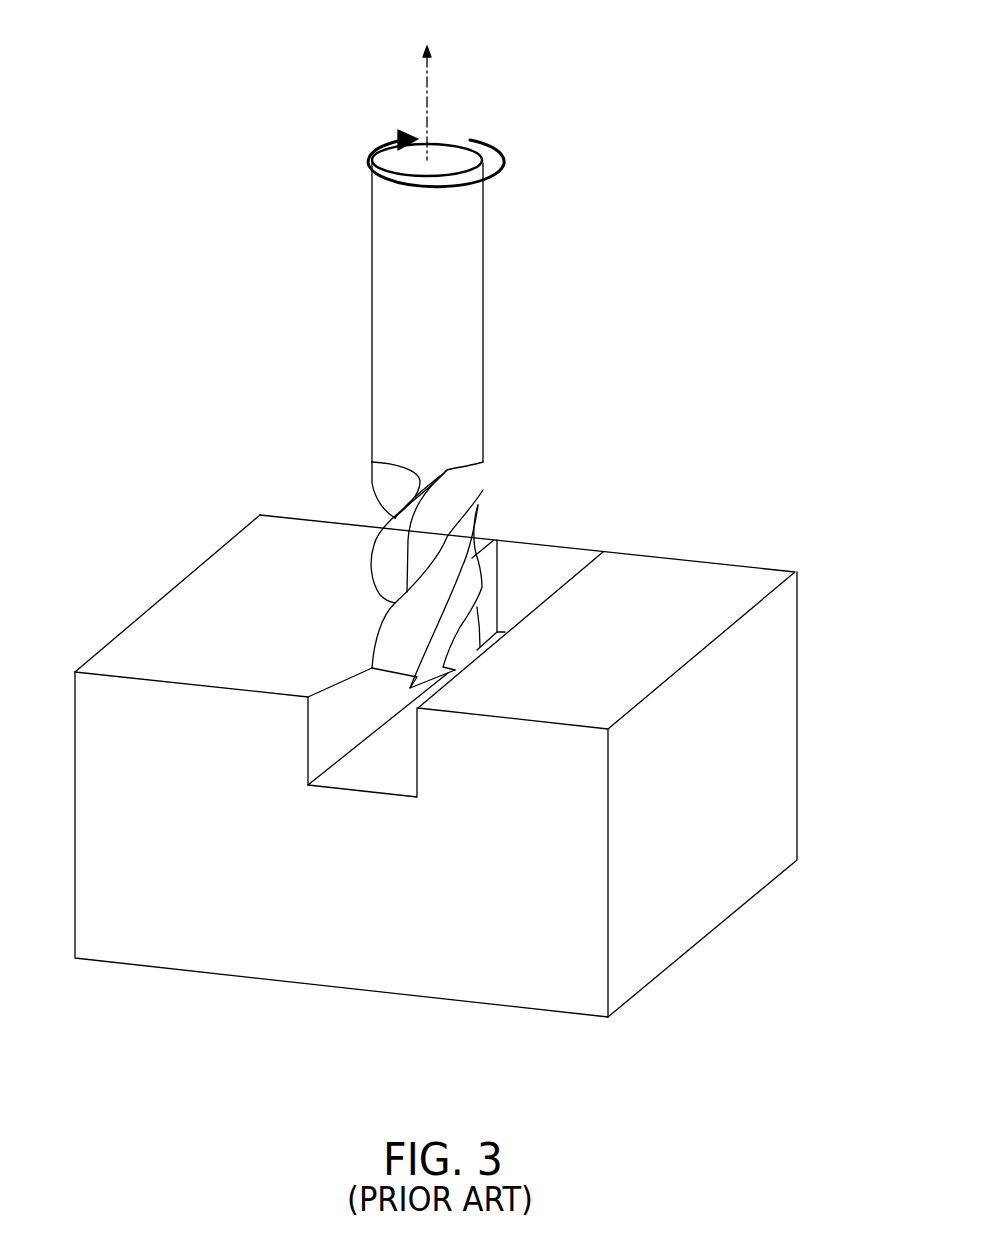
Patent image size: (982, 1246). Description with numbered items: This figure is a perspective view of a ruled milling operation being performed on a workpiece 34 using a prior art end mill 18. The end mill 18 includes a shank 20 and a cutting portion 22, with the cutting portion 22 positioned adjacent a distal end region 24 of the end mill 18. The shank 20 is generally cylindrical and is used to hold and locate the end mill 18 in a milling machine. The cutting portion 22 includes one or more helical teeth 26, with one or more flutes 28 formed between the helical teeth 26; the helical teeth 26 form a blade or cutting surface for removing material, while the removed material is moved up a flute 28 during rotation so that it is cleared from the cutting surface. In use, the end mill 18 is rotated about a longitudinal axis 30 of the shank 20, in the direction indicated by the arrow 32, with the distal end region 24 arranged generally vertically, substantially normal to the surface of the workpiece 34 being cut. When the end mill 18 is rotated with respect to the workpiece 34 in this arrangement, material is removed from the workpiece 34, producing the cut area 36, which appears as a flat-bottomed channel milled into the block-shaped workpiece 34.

The end mill 18 is at (372, 507).
The shank 20 is at (465, 285).
The cutting portion 22 is at (413, 666).
The distal end region 24 is at (392, 686).
The helical teeth 26 is at (457, 550).
The flutes 28 is at (393, 593).
The longitudinal axis 30 is at (428, 110).
The arrow 32 is at (492, 175).
The workpiece 34 is at (436, 759).
The cut area 36 is at (335, 745).